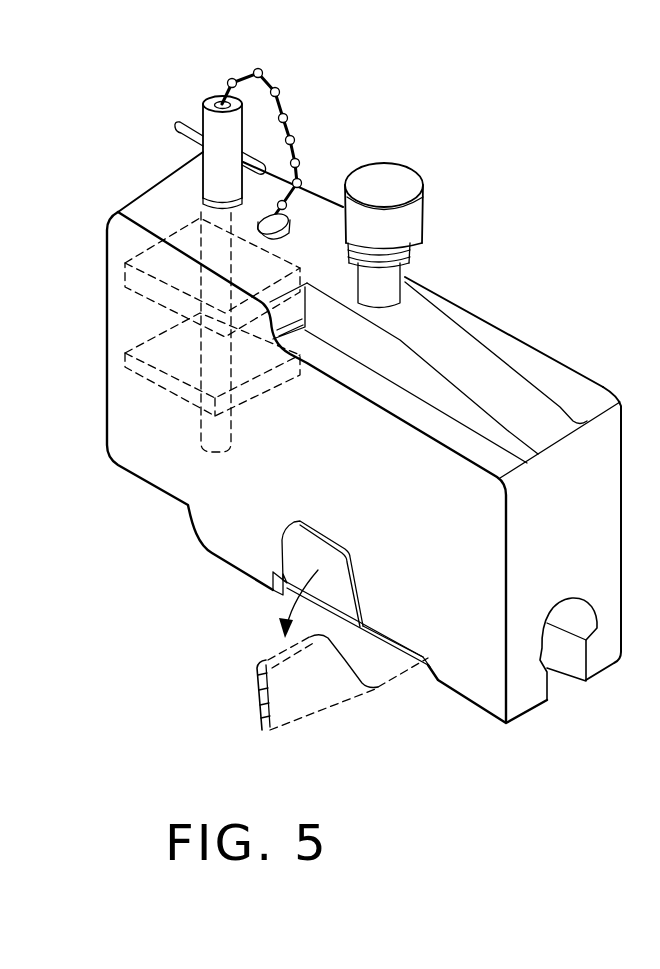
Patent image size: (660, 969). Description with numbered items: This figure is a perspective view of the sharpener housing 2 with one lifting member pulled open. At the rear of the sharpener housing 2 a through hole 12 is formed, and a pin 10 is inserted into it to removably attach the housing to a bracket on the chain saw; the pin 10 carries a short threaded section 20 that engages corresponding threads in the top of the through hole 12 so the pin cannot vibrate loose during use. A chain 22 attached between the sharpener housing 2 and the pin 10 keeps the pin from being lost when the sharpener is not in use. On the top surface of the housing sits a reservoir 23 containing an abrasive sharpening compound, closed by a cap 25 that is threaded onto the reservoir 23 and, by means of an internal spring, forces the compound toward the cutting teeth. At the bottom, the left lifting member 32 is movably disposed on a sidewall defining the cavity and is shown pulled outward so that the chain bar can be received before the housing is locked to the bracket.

The sharpener housing 2 is at (538, 309).
The pin 10 is at (207, 120).
The through hole 12 is at (153, 342).
The threaded section 20 is at (198, 193).
The chain 22 is at (282, 120).
The reservoir 23 is at (408, 277).
The cap 25 is at (402, 228).
The left lifting member 32 is at (262, 688).